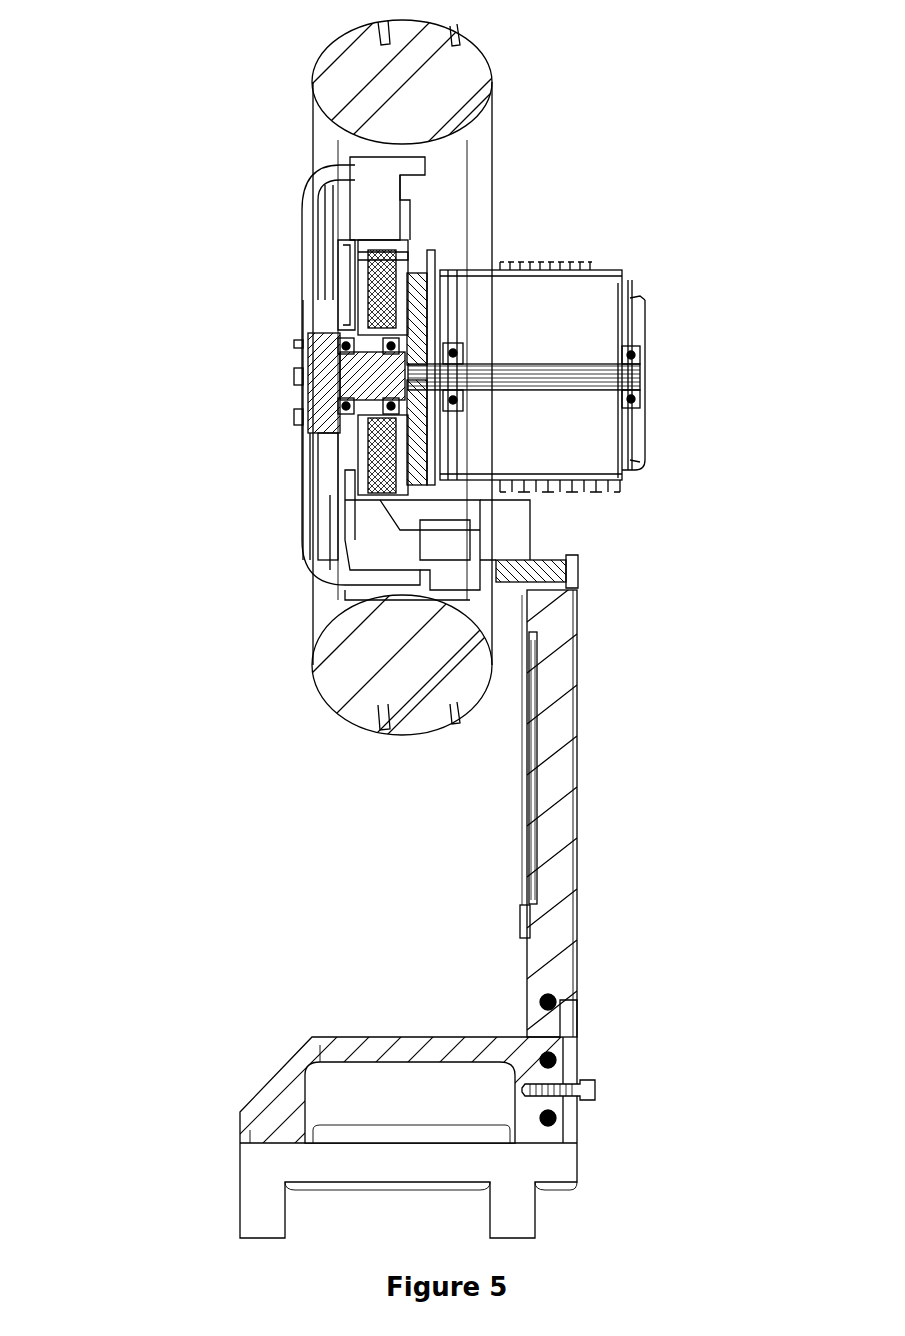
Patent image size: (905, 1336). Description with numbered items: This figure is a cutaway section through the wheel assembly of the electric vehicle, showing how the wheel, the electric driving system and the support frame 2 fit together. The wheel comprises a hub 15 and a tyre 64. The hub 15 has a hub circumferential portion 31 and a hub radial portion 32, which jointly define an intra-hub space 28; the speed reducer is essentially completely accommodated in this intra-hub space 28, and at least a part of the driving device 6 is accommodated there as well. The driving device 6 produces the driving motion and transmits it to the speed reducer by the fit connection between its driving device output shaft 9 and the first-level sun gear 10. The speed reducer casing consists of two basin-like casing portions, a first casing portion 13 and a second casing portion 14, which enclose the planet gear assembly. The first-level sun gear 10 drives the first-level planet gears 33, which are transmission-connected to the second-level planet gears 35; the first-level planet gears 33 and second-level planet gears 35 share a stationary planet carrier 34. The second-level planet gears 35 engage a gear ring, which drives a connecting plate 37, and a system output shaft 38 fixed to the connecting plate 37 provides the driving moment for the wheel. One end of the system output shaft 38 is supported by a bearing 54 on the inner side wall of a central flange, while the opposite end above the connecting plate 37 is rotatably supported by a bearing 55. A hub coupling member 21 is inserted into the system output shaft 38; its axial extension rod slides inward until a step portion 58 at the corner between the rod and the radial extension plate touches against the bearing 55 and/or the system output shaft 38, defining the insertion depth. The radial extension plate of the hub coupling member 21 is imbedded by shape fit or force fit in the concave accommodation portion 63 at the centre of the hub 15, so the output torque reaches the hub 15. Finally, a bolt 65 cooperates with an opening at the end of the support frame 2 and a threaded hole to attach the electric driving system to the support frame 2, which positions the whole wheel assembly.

The support frame 2 is at (522, 847).
The driving device 6 is at (560, 340).
The driving device output shaft 9 is at (465, 392).
The level-1 sun gear 10 is at (383, 372).
The first casing portion 13 is at (402, 253).
The second casing portion 14 is at (342, 518).
The hub 15 is at (277, 553).
The hub coupling member 21 is at (293, 393).
The intra-hub space 28 is at (313, 223).
The hub circumferential portion 31 is at (293, 195).
The hub radial portion 32 is at (277, 540).
The level-1 planet gears 33 is at (383, 308).
The stationary planet carrier 34 is at (362, 475).
The level-2 planet gears 35 is at (332, 308).
The connecting plate 37 is at (345, 345).
The system output shaft 38 is at (327, 372).
The bearing 54 is at (340, 360).
The bearing 55 is at (302, 428).
The step portion 58 is at (293, 415).
The concave accommodation portion 63 is at (277, 375).
The tyre 64 is at (338, 687).
The bolt 65 is at (497, 578).